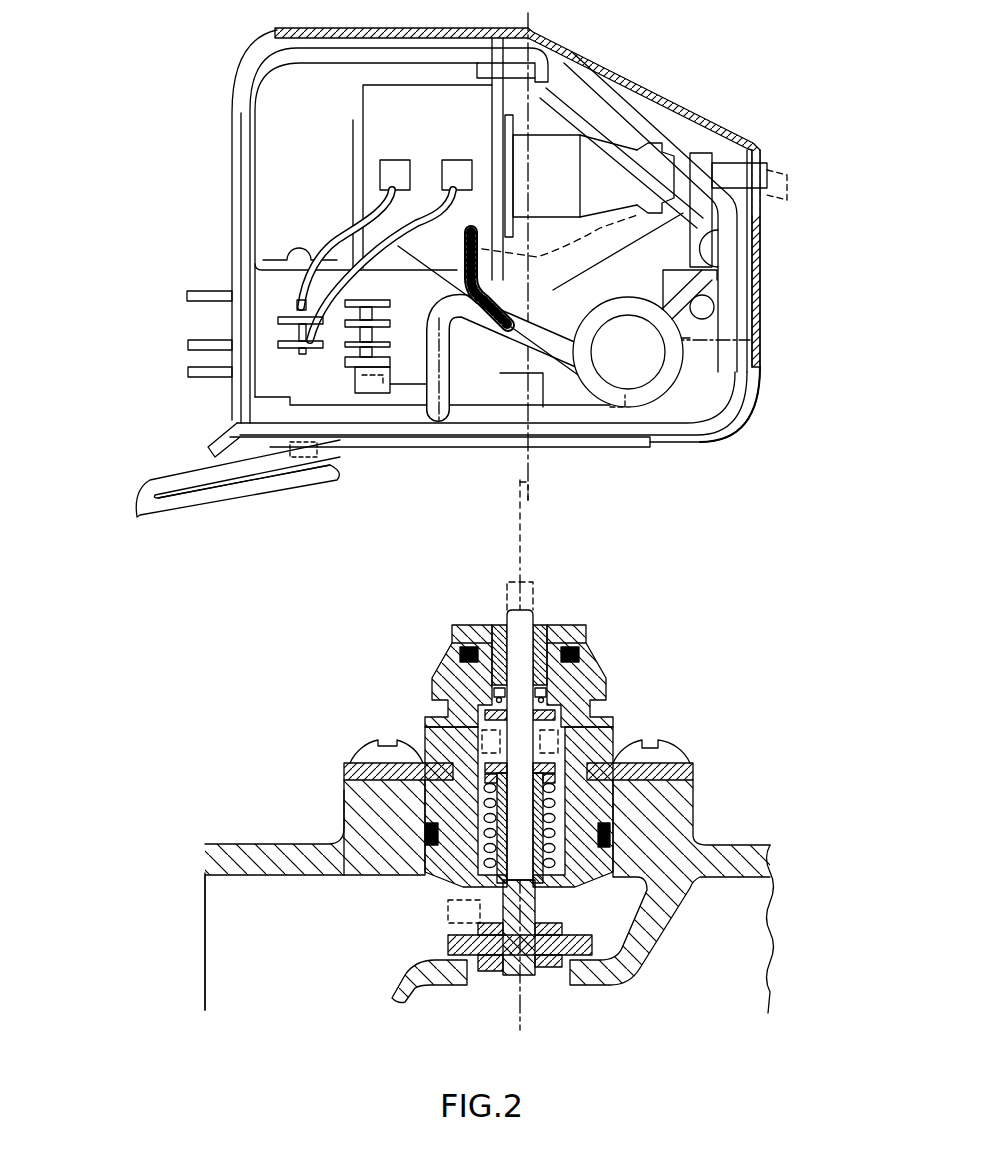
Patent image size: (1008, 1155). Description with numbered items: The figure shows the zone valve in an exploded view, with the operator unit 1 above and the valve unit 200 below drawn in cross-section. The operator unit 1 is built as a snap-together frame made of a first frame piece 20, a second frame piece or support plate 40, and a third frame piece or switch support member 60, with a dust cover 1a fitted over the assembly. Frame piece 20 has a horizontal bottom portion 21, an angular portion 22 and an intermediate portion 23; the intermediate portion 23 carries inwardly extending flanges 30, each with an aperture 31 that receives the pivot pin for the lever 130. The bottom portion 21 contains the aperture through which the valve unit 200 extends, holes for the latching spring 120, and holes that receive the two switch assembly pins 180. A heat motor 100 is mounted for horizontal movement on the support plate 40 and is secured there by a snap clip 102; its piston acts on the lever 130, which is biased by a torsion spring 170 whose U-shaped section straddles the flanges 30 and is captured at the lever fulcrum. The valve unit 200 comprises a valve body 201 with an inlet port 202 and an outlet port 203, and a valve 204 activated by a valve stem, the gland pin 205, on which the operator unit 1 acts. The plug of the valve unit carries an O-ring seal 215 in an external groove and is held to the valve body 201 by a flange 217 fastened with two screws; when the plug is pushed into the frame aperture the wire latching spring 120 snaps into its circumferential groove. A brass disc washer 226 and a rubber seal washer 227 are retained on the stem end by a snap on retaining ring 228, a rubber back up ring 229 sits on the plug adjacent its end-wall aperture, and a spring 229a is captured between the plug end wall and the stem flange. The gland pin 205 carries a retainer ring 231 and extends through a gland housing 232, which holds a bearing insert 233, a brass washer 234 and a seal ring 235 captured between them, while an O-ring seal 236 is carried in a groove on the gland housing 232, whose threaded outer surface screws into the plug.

The operator unit 1 is at (205, 160).
The dust cover 1a is at (393, 28).
The first frame piece 20 is at (690, 427).
The horizontal bottom portion 21 is at (580, 427).
The angular portion 22 is at (630, 132).
The intermediate portion 23 is at (745, 305).
The inwardly extending flanges 30 is at (753, 383).
The aperture 31 is at (710, 282).
The support plate 40 is at (498, 100).
The switch support member 60 is at (255, 78).
The heat motor 100 is at (363, 105).
The snap clip 102 is at (512, 125).
The latching spring 120 is at (196, 510).
The lever 130 is at (597, 255).
The torsion spring 170 is at (665, 385).
The switch assembly pins 180 is at (275, 285).
The valve unit 200 is at (412, 648).
The valve body 201 is at (230, 845).
The inlet port 202 is at (755, 910).
The outlet port 203 is at (262, 912).
The valve 204 is at (448, 945).
The gland pin 205 is at (540, 615).
The O-ring seal 215 is at (425, 833).
The flange 217 is at (344, 765).
The brass disc washer 226 is at (640, 928).
The rubber seal washer 227 is at (633, 965).
The snap on retaining ring 228 is at (553, 970).
The rubber back up ring 229 is at (660, 772).
The spring 229a is at (560, 810).
The retainer ring 231 is at (543, 766).
The gland housing 232 is at (588, 635).
The bearing insert 233 is at (497, 622).
The brass washer 234 is at (492, 696).
The seal ring 235 is at (598, 686).
The O-ring seal 236 is at (610, 665).